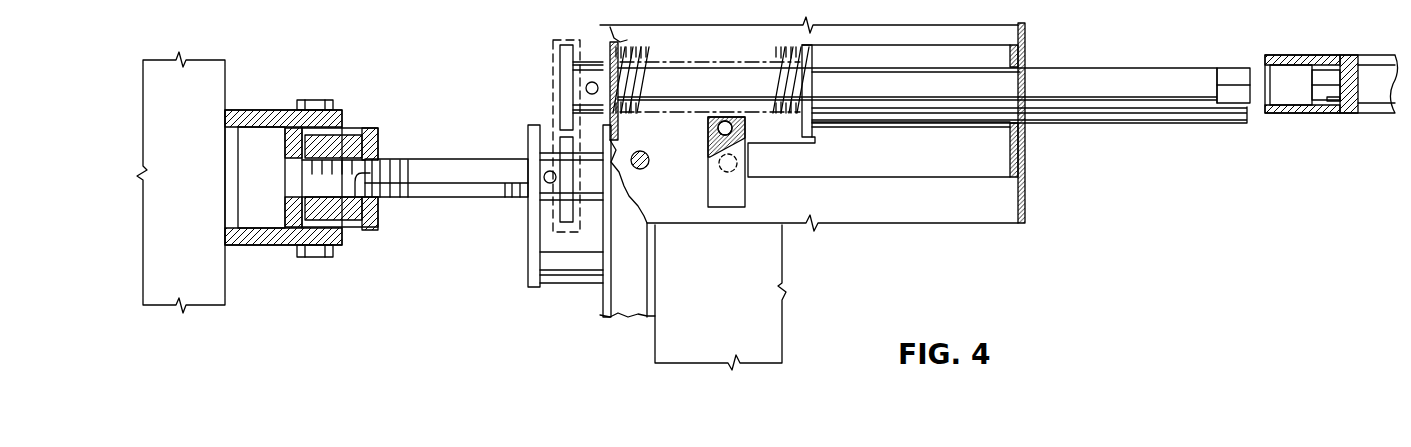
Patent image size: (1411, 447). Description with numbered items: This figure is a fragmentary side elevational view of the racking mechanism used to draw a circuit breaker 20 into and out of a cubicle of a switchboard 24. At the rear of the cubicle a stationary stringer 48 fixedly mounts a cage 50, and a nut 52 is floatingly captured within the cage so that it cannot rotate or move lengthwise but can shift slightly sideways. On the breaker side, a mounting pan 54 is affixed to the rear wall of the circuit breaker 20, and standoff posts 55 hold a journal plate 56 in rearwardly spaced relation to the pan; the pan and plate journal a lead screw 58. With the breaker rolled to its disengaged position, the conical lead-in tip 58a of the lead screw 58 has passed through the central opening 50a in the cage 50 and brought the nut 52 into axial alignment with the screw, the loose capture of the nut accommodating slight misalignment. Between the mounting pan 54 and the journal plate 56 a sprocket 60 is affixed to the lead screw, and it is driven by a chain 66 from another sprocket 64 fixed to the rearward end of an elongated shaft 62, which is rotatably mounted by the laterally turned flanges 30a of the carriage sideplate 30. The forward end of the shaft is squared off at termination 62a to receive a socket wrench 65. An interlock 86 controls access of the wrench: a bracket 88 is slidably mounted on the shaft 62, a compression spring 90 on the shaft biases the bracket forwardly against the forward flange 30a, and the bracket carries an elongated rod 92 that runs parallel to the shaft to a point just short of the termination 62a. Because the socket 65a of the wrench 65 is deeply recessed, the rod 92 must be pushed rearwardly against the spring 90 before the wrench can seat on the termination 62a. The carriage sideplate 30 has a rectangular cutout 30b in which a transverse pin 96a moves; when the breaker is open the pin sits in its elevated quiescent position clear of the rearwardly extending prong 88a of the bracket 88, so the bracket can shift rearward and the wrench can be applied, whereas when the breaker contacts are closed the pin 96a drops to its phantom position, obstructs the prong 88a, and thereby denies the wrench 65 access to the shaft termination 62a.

The circuit breaker 20 is at (782, 318).
The switchboard 24 is at (191, 167).
The carriage sideplate 30 is at (942, 212).
The laterally turned flange 30a is at (1020, 226).
The rectangular cutout 30b is at (712, 182).
The stationary stringer 48 is at (258, 243).
The cage 50 is at (377, 137).
The central opening 50a is at (377, 203).
The nut 52 is at (350, 138).
The mounting pan 54 is at (615, 318).
The standoff post 55 is at (565, 278).
The journal plate 56 is at (532, 254).
The lead screw 58 is at (450, 160).
The conical lead-in tip 58a is at (352, 220).
The sprocket 60 is at (565, 213).
The elongated shaft 62 is at (1128, 73).
The squared-off termination 62a is at (1232, 73).
The sprocket 64 is at (565, 72).
The socket wrench 65 is at (1373, 108).
The socket 65a is at (1330, 100).
The chain 66 is at (553, 98).
The interlock 86 is at (873, 175).
The bracket 88 is at (995, 55).
The prong 88a is at (778, 165).
The compression spring 90 is at (785, 65).
The elongated rod 92 is at (1140, 113).
The transverse pin 96a is at (718, 128).